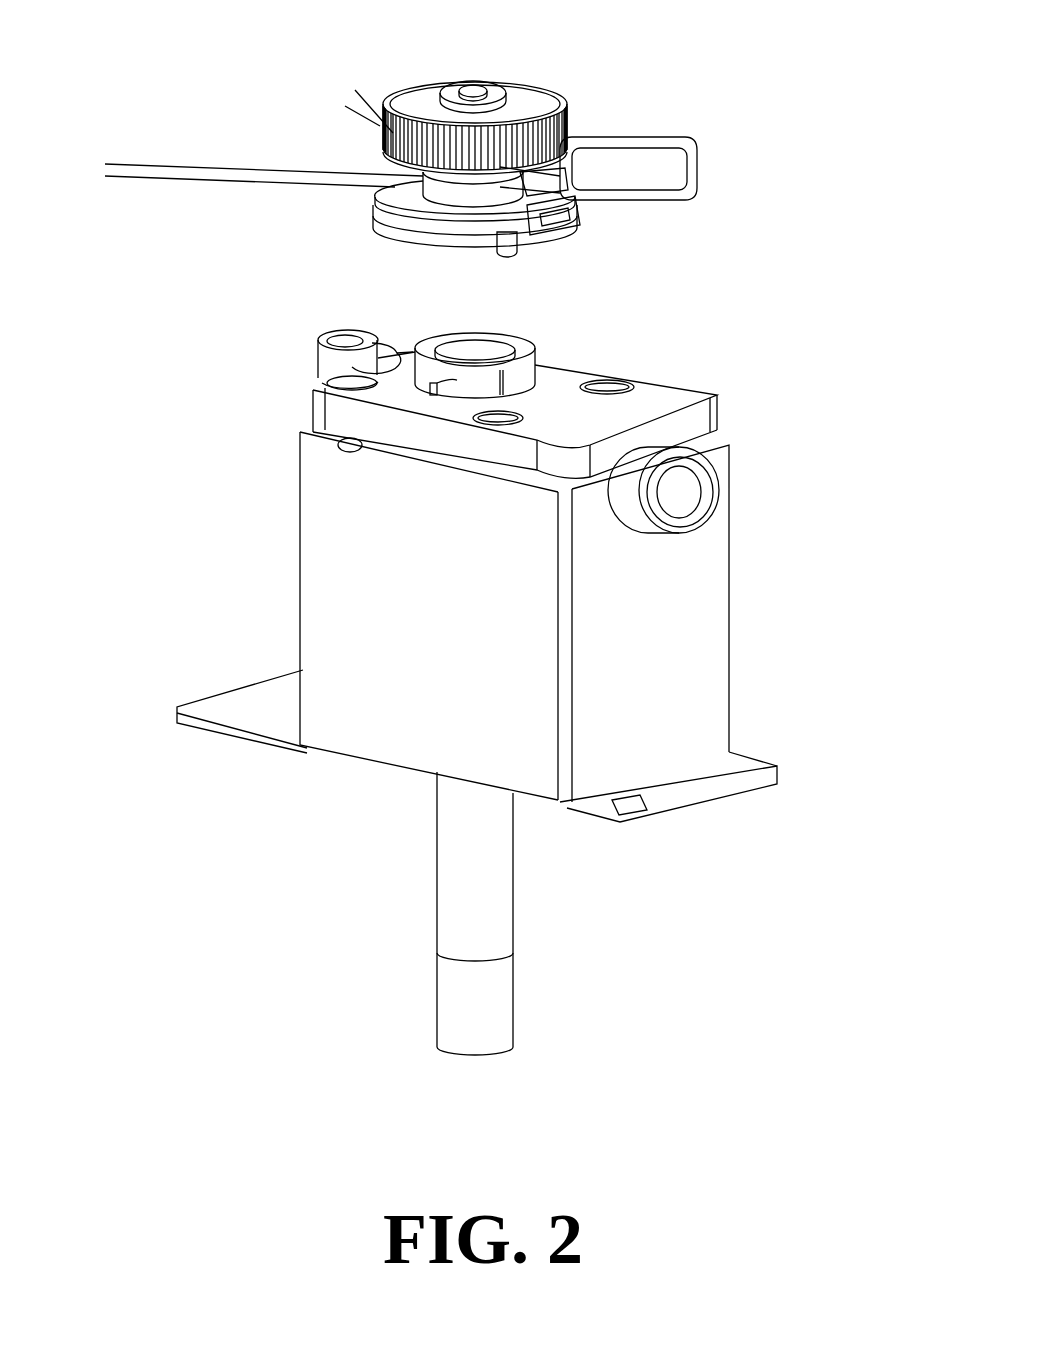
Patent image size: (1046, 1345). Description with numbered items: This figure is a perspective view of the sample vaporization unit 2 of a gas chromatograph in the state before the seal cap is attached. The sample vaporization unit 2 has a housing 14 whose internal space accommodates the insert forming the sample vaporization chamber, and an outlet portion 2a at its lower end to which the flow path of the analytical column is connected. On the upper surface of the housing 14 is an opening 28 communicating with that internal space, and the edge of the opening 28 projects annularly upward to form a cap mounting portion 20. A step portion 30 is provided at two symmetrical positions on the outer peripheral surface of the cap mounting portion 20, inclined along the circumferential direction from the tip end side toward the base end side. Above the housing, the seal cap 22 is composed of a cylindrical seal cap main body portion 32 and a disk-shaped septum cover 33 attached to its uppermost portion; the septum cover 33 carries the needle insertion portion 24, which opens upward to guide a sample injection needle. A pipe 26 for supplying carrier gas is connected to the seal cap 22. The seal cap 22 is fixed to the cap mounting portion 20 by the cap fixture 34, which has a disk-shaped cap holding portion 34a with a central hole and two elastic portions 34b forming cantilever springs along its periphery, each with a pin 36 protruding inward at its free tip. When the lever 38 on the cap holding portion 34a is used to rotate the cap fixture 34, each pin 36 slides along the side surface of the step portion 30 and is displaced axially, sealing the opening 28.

The sample vaporization unit 2 is at (184, 305).
The outlet portion 2a is at (472, 1055).
The housing 14 is at (712, 598).
The cap mounting portion 20 is at (525, 372).
The seal cap 22 is at (310, 91).
The needle insertion portion 24 is at (470, 86).
The pipe 26 is at (222, 172).
The opening 28 is at (470, 355).
The step portion 30 is at (432, 392).
The seal cap main body portion 32 is at (457, 183).
The septum cover 33 is at (537, 106).
The cap fixture 34 is at (268, 200).
The cap holding portion 34a is at (375, 197).
The elastic portion 34b is at (375, 230).
The pin 36 is at (519, 248).
The lever 38 is at (661, 177).